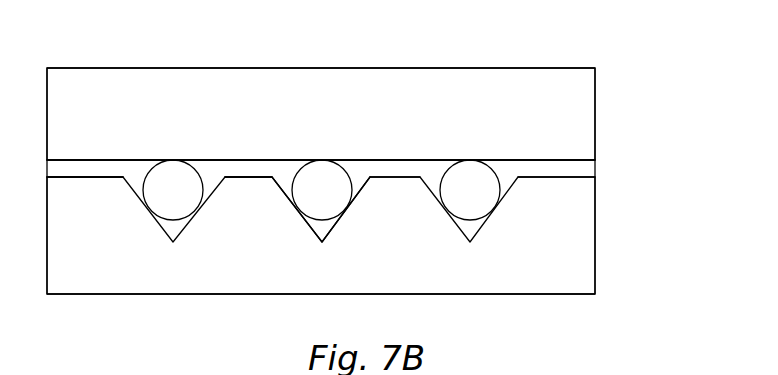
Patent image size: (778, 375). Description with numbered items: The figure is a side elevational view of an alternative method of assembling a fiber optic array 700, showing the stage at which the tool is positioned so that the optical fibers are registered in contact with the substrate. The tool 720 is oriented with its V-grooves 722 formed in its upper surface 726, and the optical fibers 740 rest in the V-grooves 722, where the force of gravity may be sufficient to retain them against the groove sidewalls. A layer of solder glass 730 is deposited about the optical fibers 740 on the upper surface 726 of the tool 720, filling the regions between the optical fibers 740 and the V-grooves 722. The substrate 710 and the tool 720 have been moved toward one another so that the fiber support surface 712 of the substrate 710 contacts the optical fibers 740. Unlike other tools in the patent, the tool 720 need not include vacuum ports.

The fiber optic array 700 is at (615, 373).
The substrate 710 is at (595, 112).
The fiber support surface 712 is at (121, 158).
The tool 720 is at (595, 223).
The V-grooves 722 is at (210, 182).
The upper surface 726 is at (93, 176).
The solder glass 730 is at (587, 167).
The optical fibers 740 is at (158, 192).